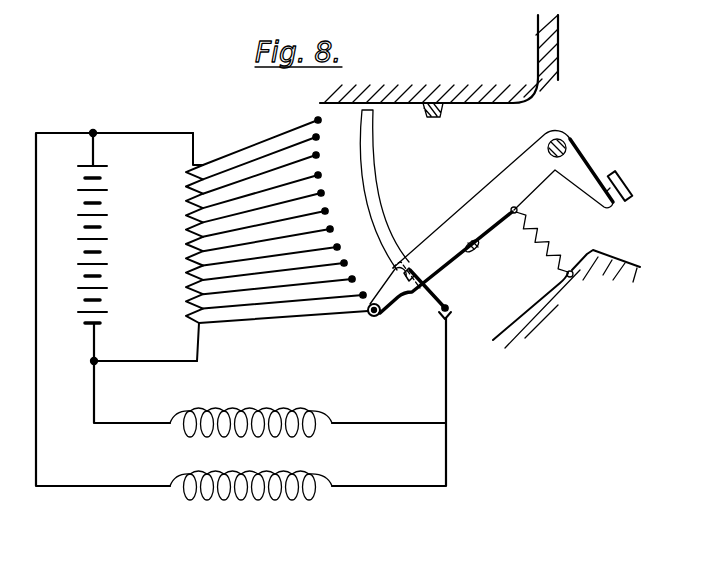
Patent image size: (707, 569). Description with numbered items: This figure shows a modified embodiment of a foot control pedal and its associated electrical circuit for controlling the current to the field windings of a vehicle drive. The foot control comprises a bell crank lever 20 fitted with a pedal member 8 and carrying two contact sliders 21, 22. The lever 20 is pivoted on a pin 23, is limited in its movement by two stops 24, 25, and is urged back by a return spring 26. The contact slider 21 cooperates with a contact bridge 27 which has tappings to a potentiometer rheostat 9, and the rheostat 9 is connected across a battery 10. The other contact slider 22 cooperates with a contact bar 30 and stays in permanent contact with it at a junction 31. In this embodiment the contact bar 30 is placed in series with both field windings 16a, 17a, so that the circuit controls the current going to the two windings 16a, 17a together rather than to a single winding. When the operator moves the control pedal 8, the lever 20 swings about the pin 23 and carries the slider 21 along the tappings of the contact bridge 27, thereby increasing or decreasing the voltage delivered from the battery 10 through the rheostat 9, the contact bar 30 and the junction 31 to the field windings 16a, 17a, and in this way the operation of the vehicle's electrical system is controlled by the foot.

The pedal member 8 is at (631, 202).
The potentiometer rheostat 9 is at (187, 247).
The battery 10 is at (106, 213).
The field winding 16a is at (252, 410).
The field winding 17a is at (247, 490).
The bell crank lever 20 is at (578, 165).
The contact slider 21 is at (375, 318).
The contact slider 22 is at (409, 287).
The pin 23 is at (566, 141).
The stop 24 is at (478, 247).
The stop 25 is at (436, 118).
The return spring 26 is at (543, 236).
The contact bridge 27 is at (348, 292).
The contact bar 30 is at (367, 132).
The junction 31 is at (452, 308).